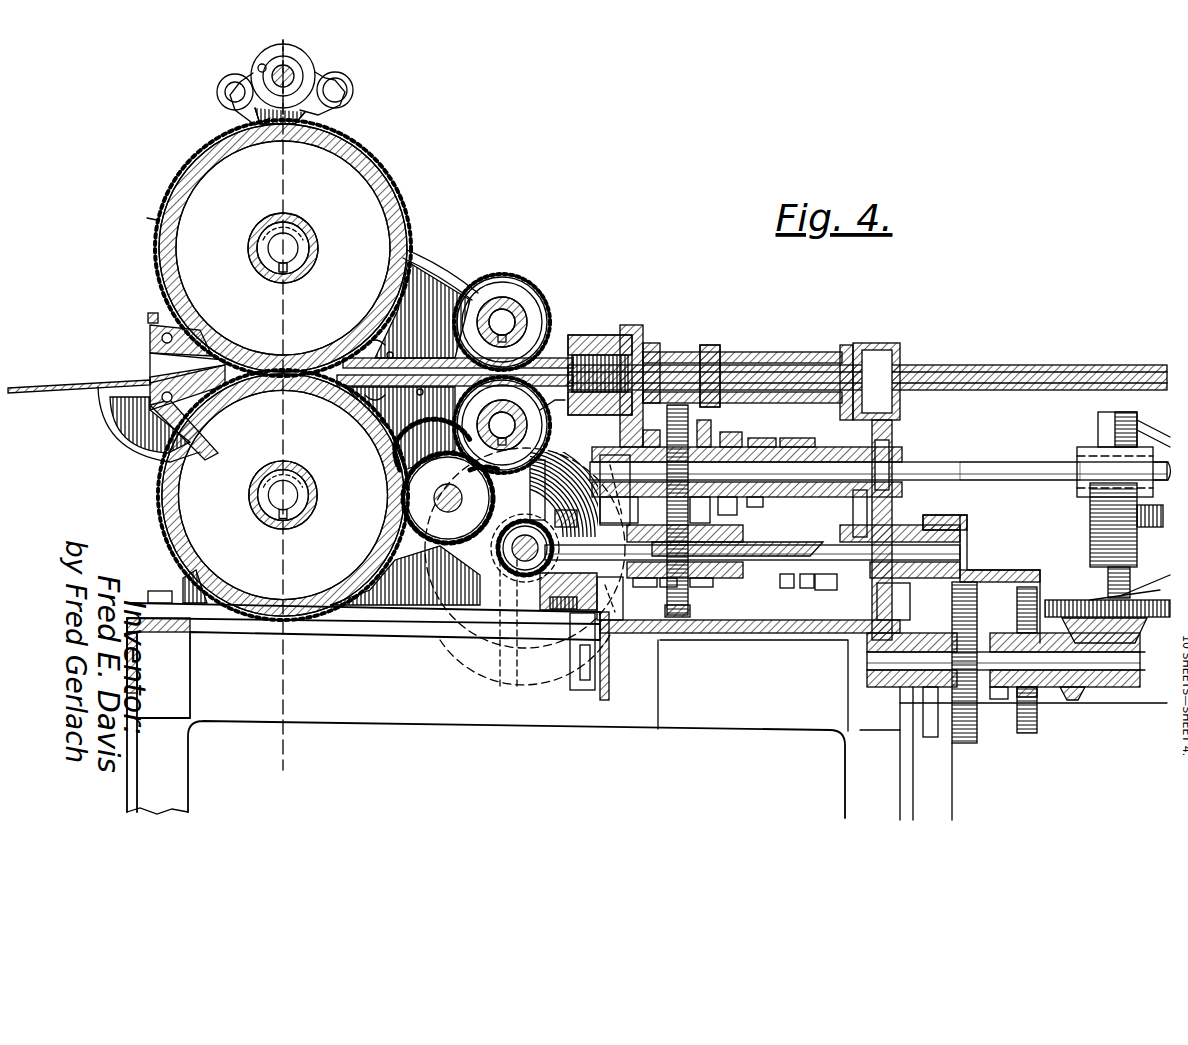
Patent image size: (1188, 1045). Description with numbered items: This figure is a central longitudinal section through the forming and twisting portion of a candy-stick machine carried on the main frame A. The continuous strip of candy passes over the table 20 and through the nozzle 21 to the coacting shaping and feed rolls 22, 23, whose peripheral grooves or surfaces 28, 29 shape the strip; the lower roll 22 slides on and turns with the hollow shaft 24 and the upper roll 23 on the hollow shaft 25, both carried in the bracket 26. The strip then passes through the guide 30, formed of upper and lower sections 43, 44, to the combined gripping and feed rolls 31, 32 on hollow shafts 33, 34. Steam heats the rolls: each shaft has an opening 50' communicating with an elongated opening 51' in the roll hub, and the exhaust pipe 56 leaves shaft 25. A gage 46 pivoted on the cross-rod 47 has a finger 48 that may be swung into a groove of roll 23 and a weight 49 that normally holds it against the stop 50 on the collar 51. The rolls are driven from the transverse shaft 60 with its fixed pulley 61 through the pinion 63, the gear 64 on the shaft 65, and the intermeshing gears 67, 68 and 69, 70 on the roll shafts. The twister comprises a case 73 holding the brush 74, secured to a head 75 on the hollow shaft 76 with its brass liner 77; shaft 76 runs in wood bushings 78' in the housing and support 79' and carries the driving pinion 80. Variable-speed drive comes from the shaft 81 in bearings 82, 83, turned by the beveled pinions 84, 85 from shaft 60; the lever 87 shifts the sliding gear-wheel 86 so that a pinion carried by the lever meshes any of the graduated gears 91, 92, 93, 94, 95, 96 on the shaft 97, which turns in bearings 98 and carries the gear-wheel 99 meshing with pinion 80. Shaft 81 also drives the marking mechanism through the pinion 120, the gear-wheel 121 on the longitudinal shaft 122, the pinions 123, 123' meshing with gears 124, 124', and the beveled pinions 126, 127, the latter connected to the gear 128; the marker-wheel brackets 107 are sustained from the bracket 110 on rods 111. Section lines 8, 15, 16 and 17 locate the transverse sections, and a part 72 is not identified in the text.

The section line 8— 8 is at (677, 340).
The section line 15— 15 is at (283, 74).
The section line 16— 16 is at (497, 272).
The section line 17— 17 is at (405, 433).
The table 20 is at (45, 388).
The nozzle 21 is at (186, 361).
The lower shaping and feed roll 22 is at (335, 395).
The upper shaping and feed roll 23 is at (365, 140).
The hollow shaft 24 is at (318, 500).
The hollow shaft 25 is at (318, 250).
The bracket 26 is at (430, 270).
The peripheral groove or surface 28 is at (160, 498).
The peripheral groove or surface 29 is at (385, 168).
The guide 30 is at (425, 358).
The combined gripping and feed roll 31 is at (540, 430).
The combined gripping and feed roll 32 is at (547, 305).
The hollow shaft 33 is at (432, 449).
The hollow shaft 34 is at (537, 290).
The upper section of guide 43 is at (390, 346).
The lower section of guide 44 is at (413, 399).
The gage 46 is at (217, 102).
The cross-rod 47 is at (295, 72).
The finger 48 is at (225, 115).
The weight 49 is at (352, 90).
The stop 50 is at (281, 86).
The opening in shaft 50' is at (257, 248).
The collar 51 is at (225, 50).
The elongated opening in hub 51' is at (263, 282).
The exhaust pipe 56 is at (417, 577).
The transverse shaft 60 is at (512, 552).
The fixed pulley 61 is at (560, 480).
The pinion 63 is at (510, 580).
The gear 64 is at (498, 560).
The shaft 65 is at (452, 508).
The gear 67 is at (160, 540).
The gear 68 is at (155, 226).
The gear 69 is at (499, 482).
The gear 70 is at (508, 300).
The bearing 72 is at (553, 405).
The case 73 is at (605, 335).
The brush 74 is at (636, 330).
The head 75 is at (660, 345).
The hollow shaft 76 is at (712, 356).
The brass liner 77 is at (775, 356).
The wood bushings 78' is at (768, 368).
The housing and support 79' is at (741, 354).
The pinion 80 is at (870, 343).
The shaft 81 is at (798, 562).
The bearing 82 is at (872, 576).
The bearing 83 is at (615, 635).
The beveled pinion 84 is at (560, 615).
The beveled pinion 85 is at (540, 655).
The gear-wheel 86 is at (690, 608).
The lever 87 is at (725, 596).
The gear 91 is at (810, 458).
The gear 92 is at (798, 448).
The gear 93 is at (768, 446).
The gear 94 is at (740, 444).
The gear 95 is at (712, 440).
The gear 96 is at (692, 425).
The shaft 97 is at (800, 498).
The bearings 98 is at (895, 460).
The gear-wheel 99 is at (852, 512).
The bracket 107 is at (1160, 588).
The bracket 110 is at (1090, 506).
The rods 111 is at (975, 470).
The pinion 120 is at (965, 518).
The gear-wheel 121 is at (930, 740).
The longitudinal shaft 122 is at (890, 688).
The pinion 123 is at (1051, 721).
The additional pinion 123' is at (989, 705).
The gear 124 is at (1034, 681).
The gear-wheel 124' is at (978, 678).
The beveled pinion 126 is at (1075, 700).
The beveled pinion 127 is at (1145, 660).
The gear 128 is at (1107, 609).
The main frame A is at (487, 710).